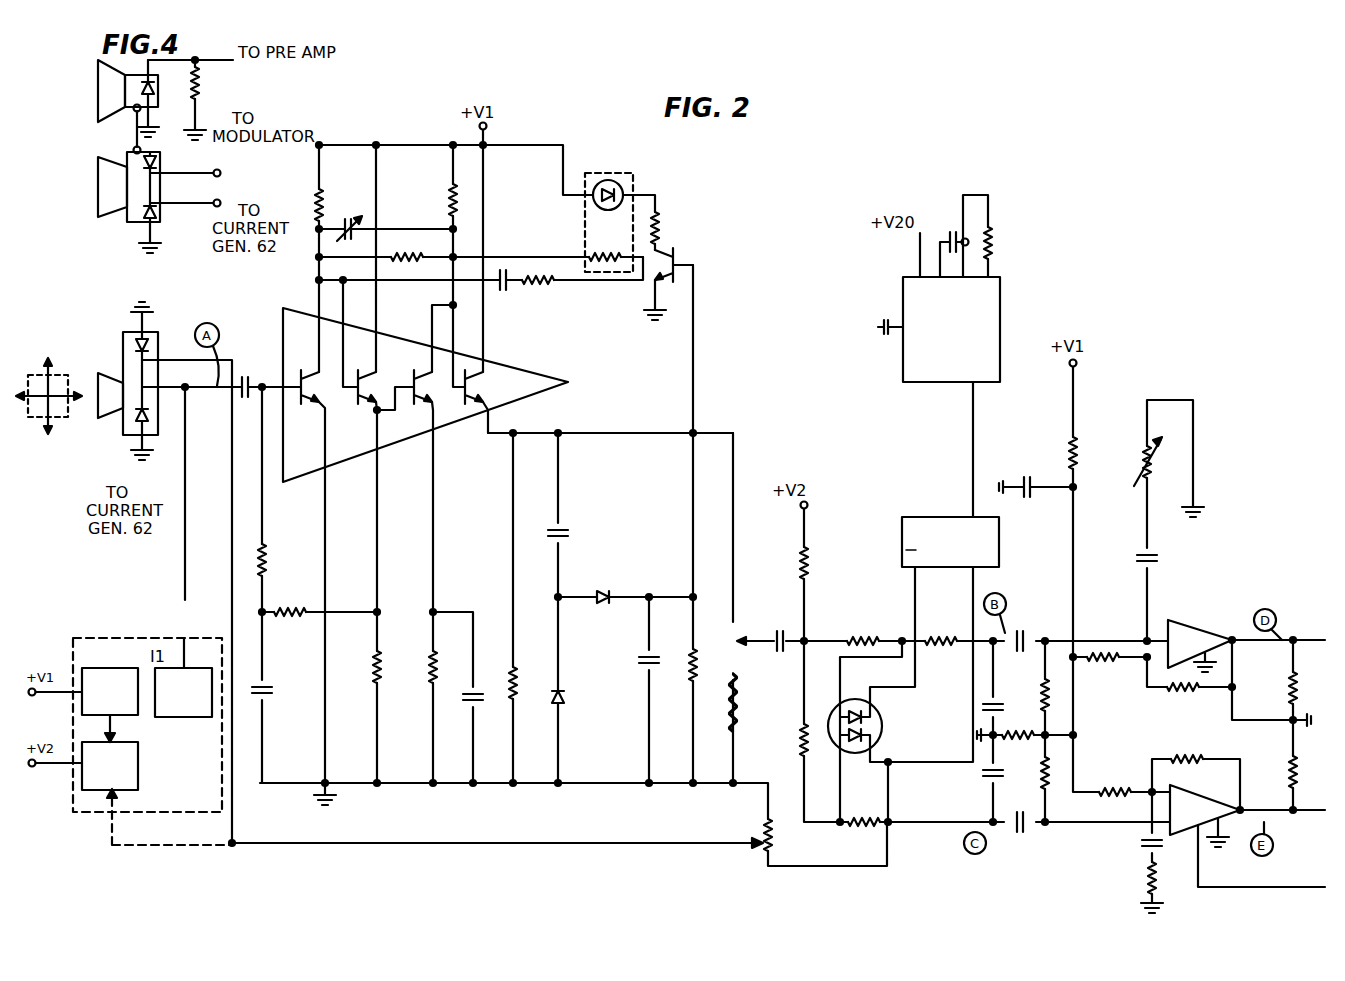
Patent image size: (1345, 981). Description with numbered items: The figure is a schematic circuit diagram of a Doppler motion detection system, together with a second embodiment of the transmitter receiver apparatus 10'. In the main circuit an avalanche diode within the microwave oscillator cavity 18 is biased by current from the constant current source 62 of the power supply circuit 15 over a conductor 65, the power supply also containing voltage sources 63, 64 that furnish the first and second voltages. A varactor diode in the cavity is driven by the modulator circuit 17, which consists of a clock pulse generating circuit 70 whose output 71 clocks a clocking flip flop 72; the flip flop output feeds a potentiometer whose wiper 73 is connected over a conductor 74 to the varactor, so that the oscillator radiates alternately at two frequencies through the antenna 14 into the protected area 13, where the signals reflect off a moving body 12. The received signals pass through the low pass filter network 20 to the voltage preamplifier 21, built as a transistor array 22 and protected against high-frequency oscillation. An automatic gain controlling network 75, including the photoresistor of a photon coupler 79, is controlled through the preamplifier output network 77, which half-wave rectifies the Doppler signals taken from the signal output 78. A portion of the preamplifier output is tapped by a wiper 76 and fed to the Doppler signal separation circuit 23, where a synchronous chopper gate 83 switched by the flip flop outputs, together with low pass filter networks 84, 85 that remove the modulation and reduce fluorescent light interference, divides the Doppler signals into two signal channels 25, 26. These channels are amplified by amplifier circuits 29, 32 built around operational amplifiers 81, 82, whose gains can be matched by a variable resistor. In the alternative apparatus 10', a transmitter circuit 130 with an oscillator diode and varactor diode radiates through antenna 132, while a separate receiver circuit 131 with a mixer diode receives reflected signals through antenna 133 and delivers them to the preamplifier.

In FIG. 4, the Doppler radar apparatus 10' is at (97, 244).
In FIG. 2, the moving body 12 is at (48, 360).
In FIG. 2, the protected area 13 is at (60, 438).
In FIG. 2, the antenna 14 is at (100, 378).
In FIG. 2, the power supply circuit 15 is at (122, 622).
In FIG. 4, the modulator circuit 17 is at (222, 170).
In FIG. 2, the modulator circuit 17 is at (879, 409).
In FIG. 2, the microwave oscillator cavity 18 is at (124, 416).
In FIG. 2, the low pass filter network 20 is at (245, 491).
In FIG. 2, the voltage preamplifier 21 is at (405, 482).
In FIG. 2, the transistor array 22 is at (450, 440).
In FIG. 2, the Doppler signal separation circuit 23 is at (904, 898).
In FIG. 2, the signal channel 25 is at (1275, 610).
In FIG. 2, the signal channel 26 is at (1244, 892).
In FIG. 2, the amplifier circuit 29 is at (1222, 614).
In FIG. 2, the amplifier circuit 32 is at (1212, 920).
In FIG. 2, the constant current source 62 is at (183, 677).
In FIG. 2, the voltage source 63 is at (110, 691).
In FIG. 2, the voltage source 64 is at (110, 766).
In FIG. 2, the conductor 65 is at (186, 538).
In FIG. 2, the clock pulse generating circuit 70 is at (978, 318).
In FIG. 2, the output of the clock pulse generator 71 is at (975, 442).
In FIG. 2, the clocking flip flop 72 is at (902, 540).
In FIG. 2, the wiper 73 is at (752, 850).
In FIG. 2, the conductor 74 is at (518, 843).
In FIG. 2, the automatic gain controlling network 75 is at (600, 296).
In FIG. 2, the wiper 76 is at (766, 652).
In FIG. 2, the preamplifier output network 77 is at (644, 528).
In FIG. 2, the signal output 78 is at (538, 433).
In FIG. 2, the photon coupler 79 is at (583, 226).
In FIG. 2, the operational amplifier 81 is at (1200, 646).
In FIG. 2, the operational amplifier 82 is at (1205, 816).
In FIG. 2, the synchronous chopper gate 83 is at (884, 734).
In FIG. 2, the low pass filter network 84 is at (960, 648).
In FIG. 2, the low pass filter network 85 is at (897, 833).
In FIG. 4, the transmitter circuit 130 is at (118, 213).
In FIG. 4, the receiver circuit 131 is at (128, 119).
In FIG. 4, the antenna 132 is at (98, 184).
In FIG. 4, the antenna 133 is at (98, 96).